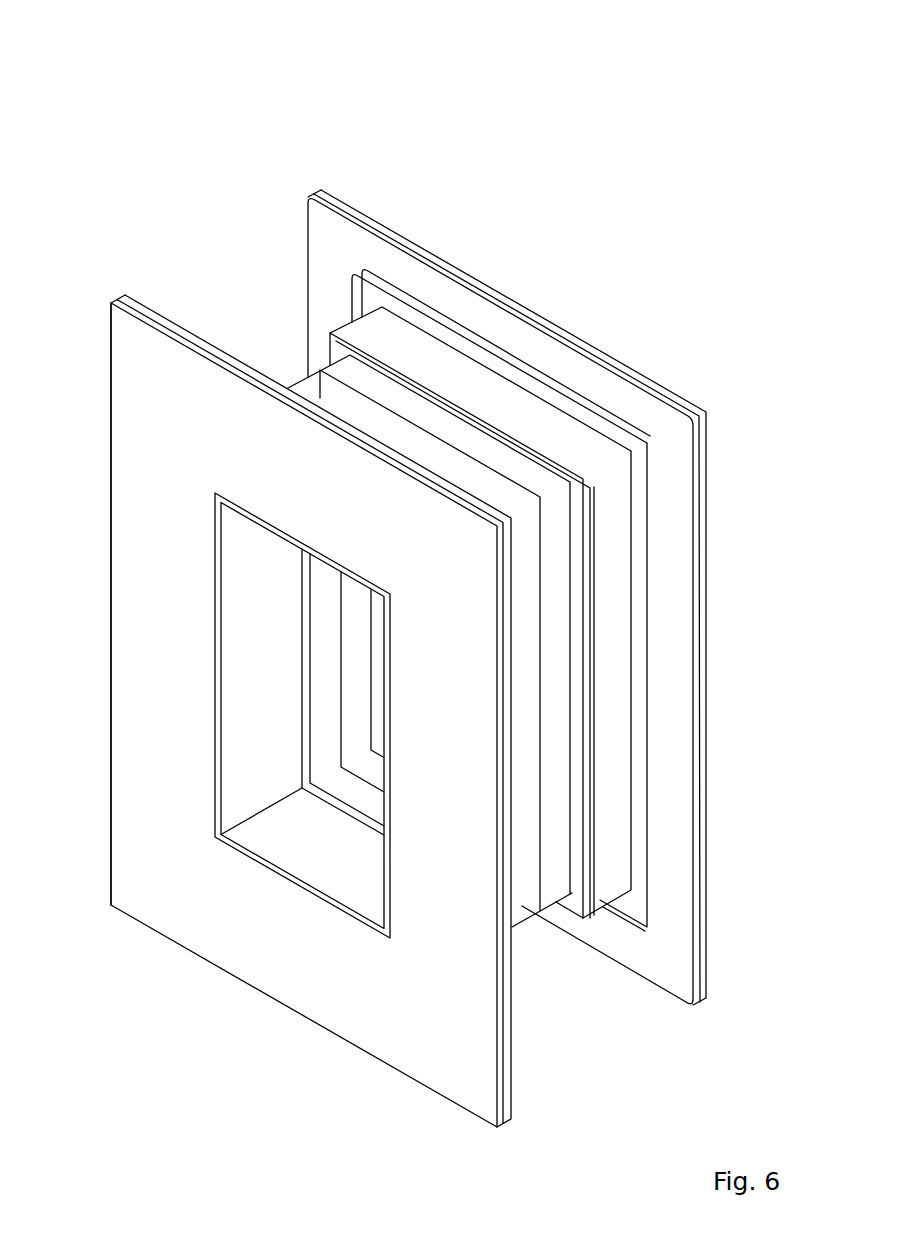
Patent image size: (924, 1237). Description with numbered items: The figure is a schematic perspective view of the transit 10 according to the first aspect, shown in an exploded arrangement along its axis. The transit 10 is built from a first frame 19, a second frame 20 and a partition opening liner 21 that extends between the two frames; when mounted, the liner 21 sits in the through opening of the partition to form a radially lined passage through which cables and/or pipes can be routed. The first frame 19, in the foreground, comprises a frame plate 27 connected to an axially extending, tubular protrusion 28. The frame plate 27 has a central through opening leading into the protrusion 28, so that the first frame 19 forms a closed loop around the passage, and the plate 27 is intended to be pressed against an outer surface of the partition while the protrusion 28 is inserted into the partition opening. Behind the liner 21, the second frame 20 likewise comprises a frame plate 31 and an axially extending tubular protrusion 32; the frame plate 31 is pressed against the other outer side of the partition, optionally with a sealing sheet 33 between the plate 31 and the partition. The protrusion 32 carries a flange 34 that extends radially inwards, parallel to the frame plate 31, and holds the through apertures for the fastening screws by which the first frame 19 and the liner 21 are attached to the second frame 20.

The transit 10 is at (200, 140).
The first frame 19 is at (130, 655).
The second frame 20 is at (718, 556).
The partition opening liner 21 is at (538, 935).
The frame plate 27 is at (121, 512).
The tubular protrusion 28 is at (265, 778).
The frame plate 31 is at (708, 633).
The tubular protrusion 32 is at (613, 804).
The sealing sheet 33 is at (683, 707).
The flange 34 is at (578, 860).